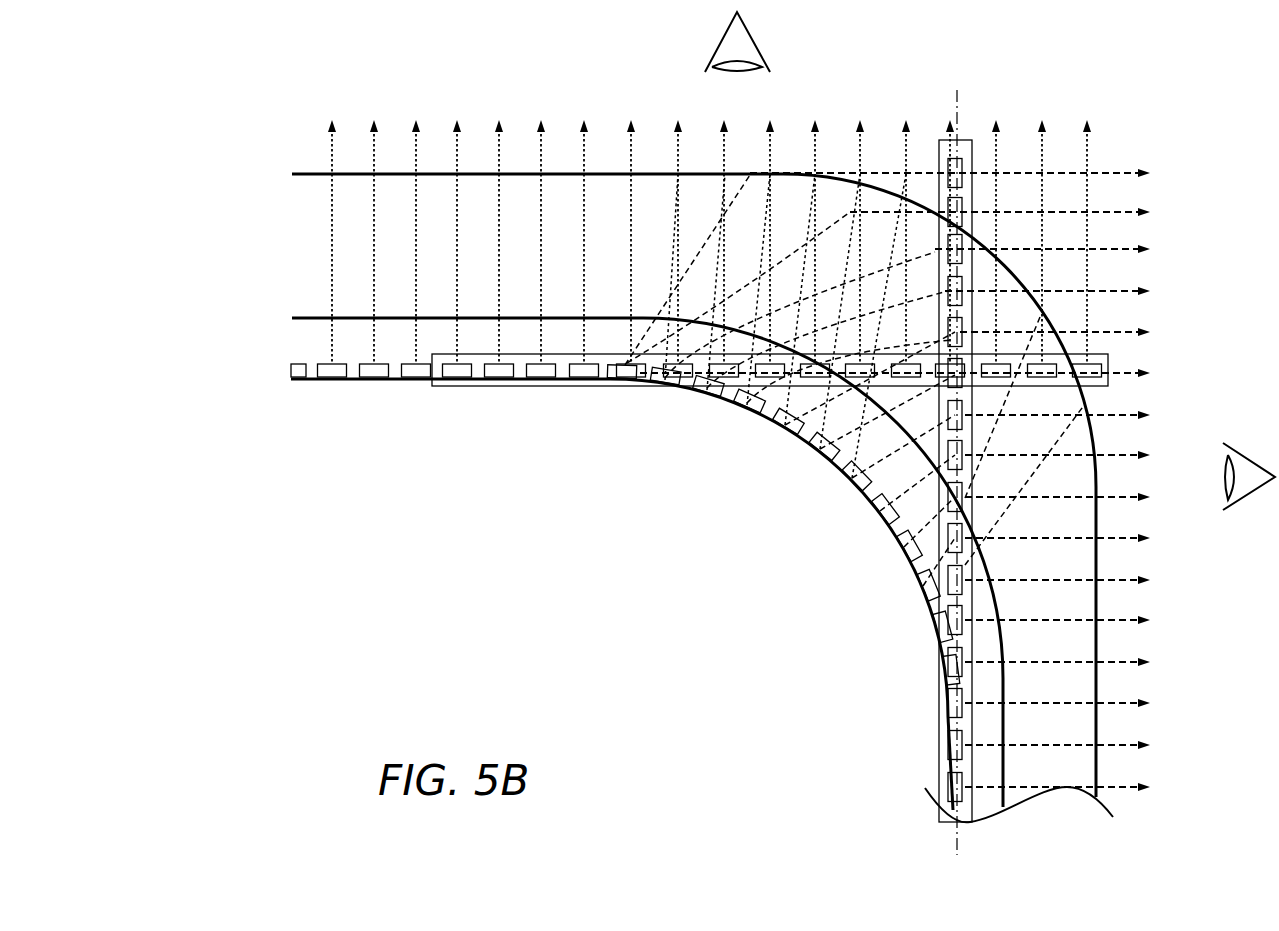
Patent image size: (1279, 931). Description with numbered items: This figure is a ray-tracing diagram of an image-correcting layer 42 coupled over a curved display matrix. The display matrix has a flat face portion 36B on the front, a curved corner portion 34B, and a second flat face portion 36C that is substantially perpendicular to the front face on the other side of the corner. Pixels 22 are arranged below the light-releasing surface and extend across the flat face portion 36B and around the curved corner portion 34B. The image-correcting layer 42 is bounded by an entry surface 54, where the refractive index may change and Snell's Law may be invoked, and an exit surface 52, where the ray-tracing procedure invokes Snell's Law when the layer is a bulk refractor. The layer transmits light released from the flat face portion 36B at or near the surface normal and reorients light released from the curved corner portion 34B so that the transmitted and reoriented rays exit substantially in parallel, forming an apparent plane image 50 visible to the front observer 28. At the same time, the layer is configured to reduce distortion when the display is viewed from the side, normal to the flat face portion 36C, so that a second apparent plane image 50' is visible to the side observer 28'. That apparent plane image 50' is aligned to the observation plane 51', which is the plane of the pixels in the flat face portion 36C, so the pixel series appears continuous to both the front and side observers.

The pixels 22 is at (377, 381).
The observer 28 is at (737, 42).
The side observer 28' is at (1249, 476).
The curved corner portion 34B is at (805, 532).
The flat face portion 36B is at (418, 443).
The flat face portion 36C is at (871, 755).
The image-correcting layer 42 is at (1055, 576).
The apparent plane image 50 is at (770, 409).
The apparent plane image 50' is at (918, 481).
The observation plane 51' is at (916, 472).
The exit surface 52 is at (682, 480).
The entry surface 54 is at (635, 557).